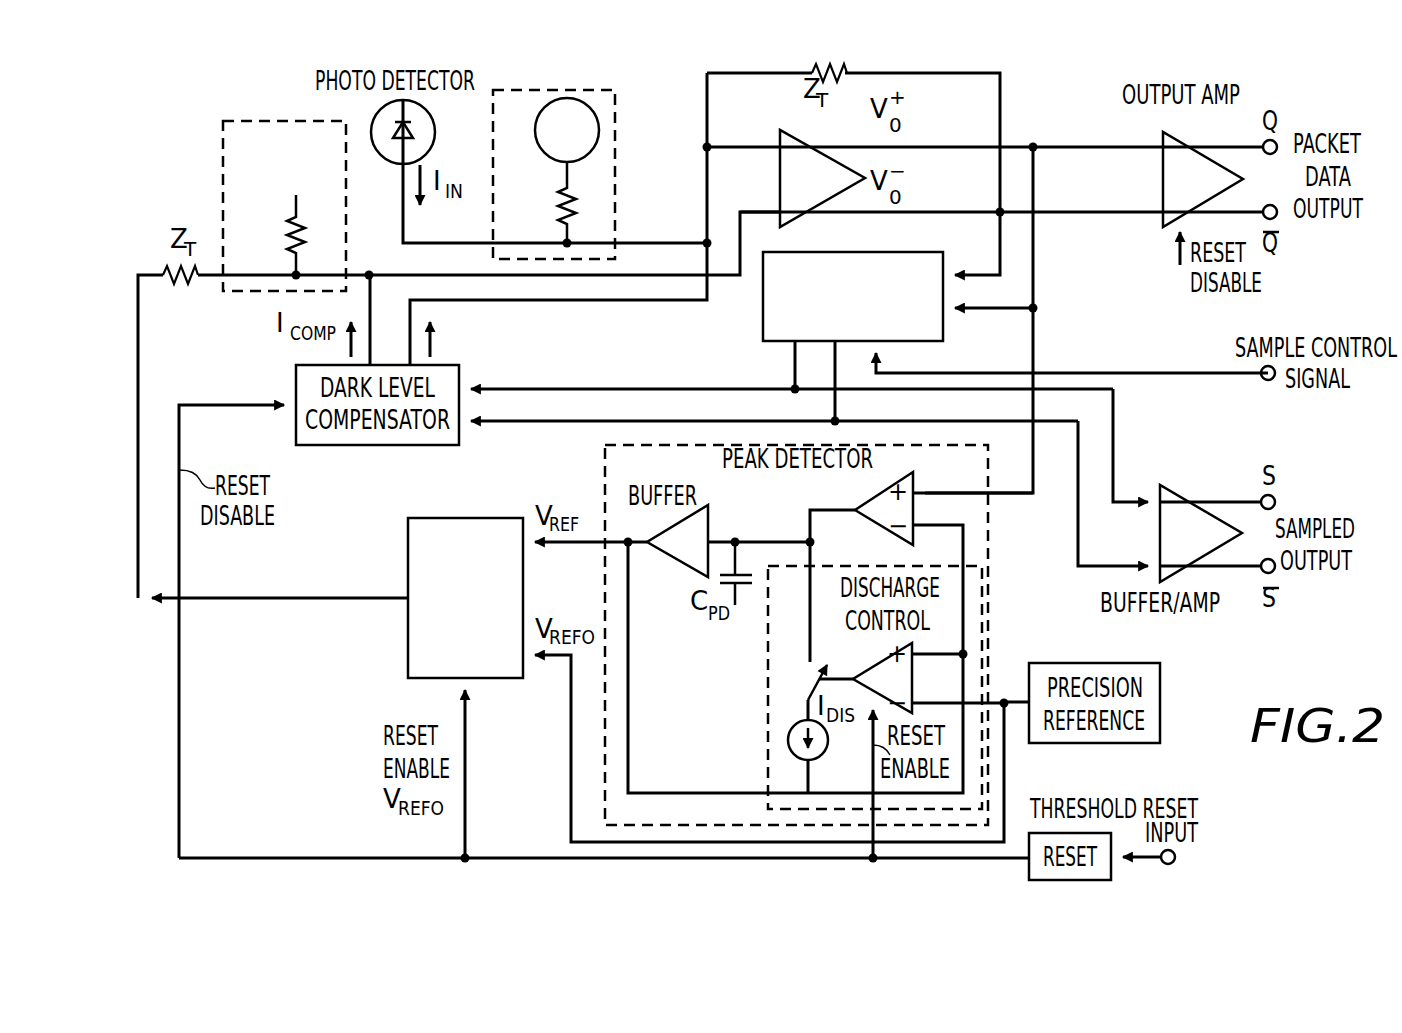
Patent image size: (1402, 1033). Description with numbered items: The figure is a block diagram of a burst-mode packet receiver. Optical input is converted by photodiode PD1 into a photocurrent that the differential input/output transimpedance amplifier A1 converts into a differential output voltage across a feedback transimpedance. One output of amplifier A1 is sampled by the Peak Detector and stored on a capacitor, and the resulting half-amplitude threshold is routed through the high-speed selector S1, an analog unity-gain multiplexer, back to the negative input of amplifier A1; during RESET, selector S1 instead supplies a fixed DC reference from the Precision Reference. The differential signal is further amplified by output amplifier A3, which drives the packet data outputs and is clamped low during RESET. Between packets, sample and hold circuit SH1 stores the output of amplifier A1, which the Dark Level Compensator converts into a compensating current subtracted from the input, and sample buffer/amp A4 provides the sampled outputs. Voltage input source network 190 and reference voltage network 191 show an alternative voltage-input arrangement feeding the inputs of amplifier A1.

The voltage input source network 190 is at (622, 128).
The reference voltage network 191 is at (223, 160).
The photodiode PD1 is at (376, 142).
The sample and hold circuit SH1 is at (763, 305).
The selector S1 is at (467, 510).
The transimpedance amplifier A1 is at (822, 178).
The output amplifier A3 is at (1203, 179).
The sample buffer/amp A4 is at (1201, 533).